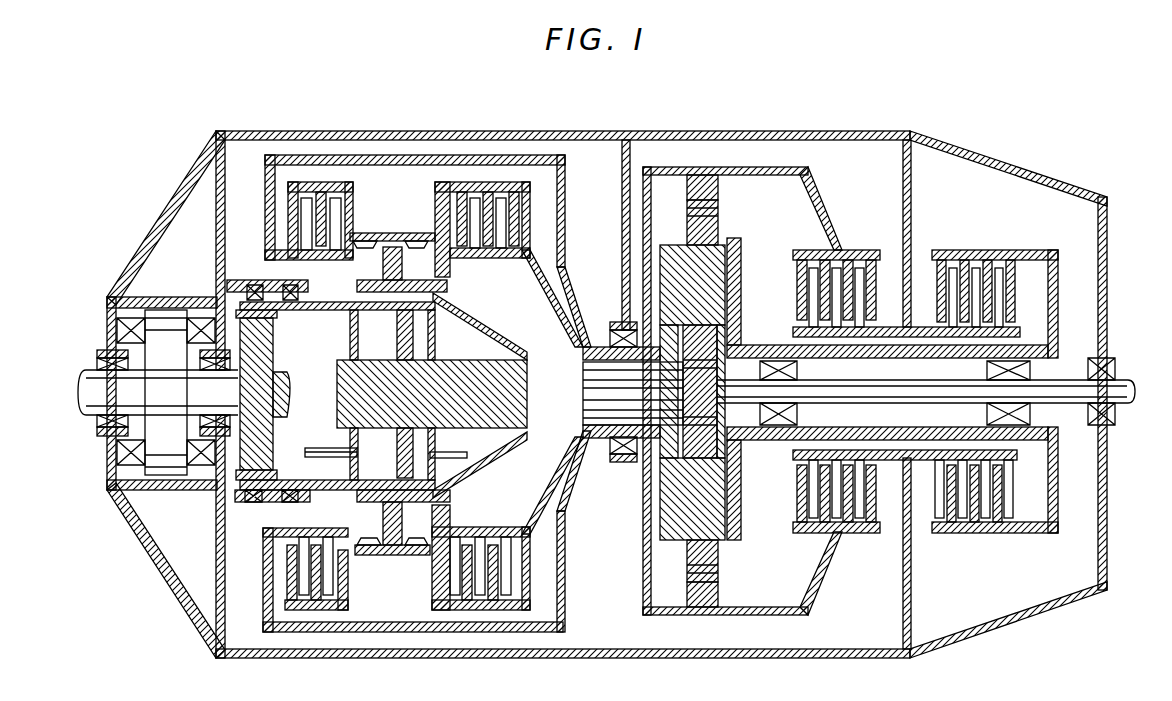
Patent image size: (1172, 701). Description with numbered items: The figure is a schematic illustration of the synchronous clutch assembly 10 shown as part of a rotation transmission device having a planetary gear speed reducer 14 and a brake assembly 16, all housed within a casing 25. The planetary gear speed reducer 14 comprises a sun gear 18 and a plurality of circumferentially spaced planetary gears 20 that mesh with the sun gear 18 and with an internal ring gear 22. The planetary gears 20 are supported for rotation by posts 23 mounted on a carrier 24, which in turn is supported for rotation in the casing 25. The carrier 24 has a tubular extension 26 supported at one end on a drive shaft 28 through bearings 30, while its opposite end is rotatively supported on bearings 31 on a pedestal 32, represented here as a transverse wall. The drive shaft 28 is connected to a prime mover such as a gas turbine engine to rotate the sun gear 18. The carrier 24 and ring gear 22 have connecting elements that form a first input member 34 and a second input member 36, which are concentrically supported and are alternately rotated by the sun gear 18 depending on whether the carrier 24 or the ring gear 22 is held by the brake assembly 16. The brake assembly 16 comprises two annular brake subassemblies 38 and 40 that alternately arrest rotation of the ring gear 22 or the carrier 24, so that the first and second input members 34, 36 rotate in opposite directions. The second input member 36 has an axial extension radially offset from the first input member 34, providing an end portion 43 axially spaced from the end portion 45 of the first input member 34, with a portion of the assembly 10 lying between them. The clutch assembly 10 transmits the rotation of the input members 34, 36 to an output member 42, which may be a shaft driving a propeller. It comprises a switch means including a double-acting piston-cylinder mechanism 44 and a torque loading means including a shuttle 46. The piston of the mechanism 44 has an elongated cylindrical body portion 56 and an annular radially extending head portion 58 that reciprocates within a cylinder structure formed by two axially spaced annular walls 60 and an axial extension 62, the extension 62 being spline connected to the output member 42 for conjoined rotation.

The synchronous clutch assembly 10 is at (378, 152).
The planetary gear speed reducer 14 is at (722, 164).
The brake assembly 16 is at (958, 246).
The sun gear 18 is at (696, 399).
The planetary gears 20 is at (722, 232).
The internal ring gear 22 is at (718, 190).
The posts 23 is at (712, 292).
The carrier 24 is at (732, 328).
The casing 25 is at (482, 130).
The tubular extension 26 is at (764, 440).
The drive shaft 28 is at (933, 369).
The bearings 30 is at (797, 372).
The bearings 31 is at (620, 440).
The pedestal 32 is at (622, 218).
The first input member 34 is at (616, 468).
The second input member 36 is at (573, 515).
The annular brake subassembly 38 is at (862, 250).
The annular brake subassembly 40 is at (1000, 258).
The output member 42 is at (78, 397).
The end portion 43 is at (263, 552).
The double-acting piston-cylinder mechanism 44 is at (505, 326).
The end portion 45 is at (490, 527).
The shuttle 46 is at (412, 560).
The cylindrical body portion 56 is at (337, 370).
The head portion 58 is at (413, 342).
The annular walls 60 is at (448, 450).
The axial extension 62 is at (345, 298).